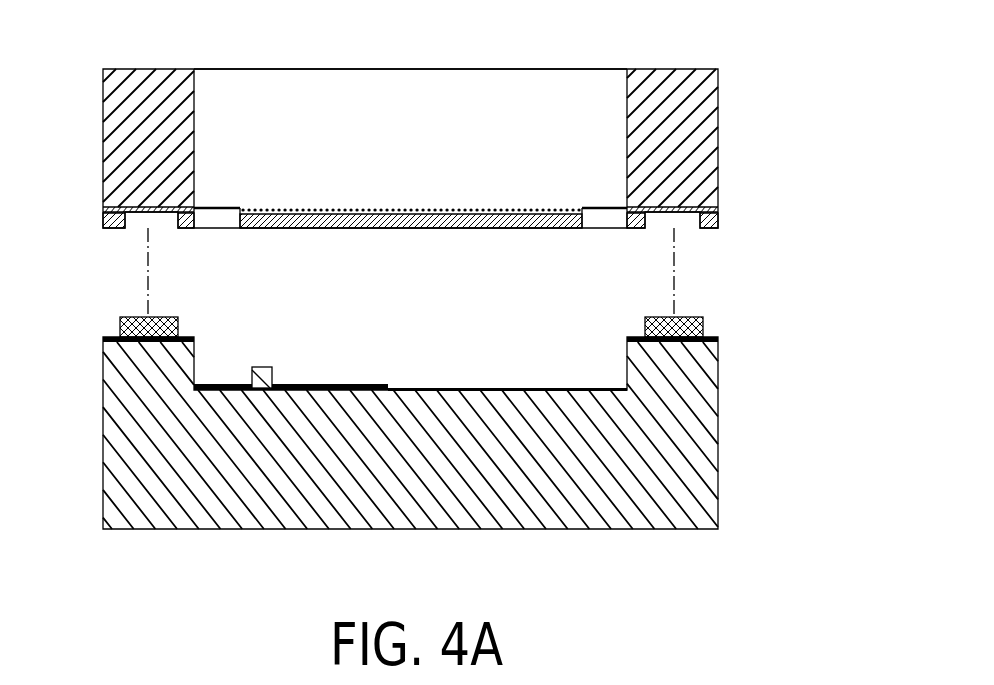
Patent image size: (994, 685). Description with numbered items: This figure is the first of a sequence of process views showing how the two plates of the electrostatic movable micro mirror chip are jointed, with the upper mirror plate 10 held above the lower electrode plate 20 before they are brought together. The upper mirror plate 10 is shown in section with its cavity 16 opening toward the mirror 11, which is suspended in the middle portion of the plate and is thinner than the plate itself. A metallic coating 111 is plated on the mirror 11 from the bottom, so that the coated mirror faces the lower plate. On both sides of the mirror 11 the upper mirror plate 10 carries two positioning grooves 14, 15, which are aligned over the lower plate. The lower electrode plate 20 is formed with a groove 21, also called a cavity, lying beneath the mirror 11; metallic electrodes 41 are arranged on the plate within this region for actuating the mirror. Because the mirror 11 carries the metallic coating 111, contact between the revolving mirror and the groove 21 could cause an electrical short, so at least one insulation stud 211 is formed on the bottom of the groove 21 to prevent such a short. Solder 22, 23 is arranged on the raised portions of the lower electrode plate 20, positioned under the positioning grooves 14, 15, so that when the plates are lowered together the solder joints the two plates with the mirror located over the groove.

The upper mirror plate 10 is at (706, 140).
The cavity 16 is at (519, 108).
The mirror 11 is at (426, 211).
The metallic coating 111 is at (358, 209).
The positioning groove 14 is at (133, 230).
The positioning groove 15 is at (690, 230).
The lower electrode plate 20 is at (697, 453).
The groove 21 is at (506, 354).
The insulation stud 211 is at (263, 366).
The metallic electrode 41 is at (322, 383).
The solder 22 is at (703, 325).
The solder 23 is at (120, 325).